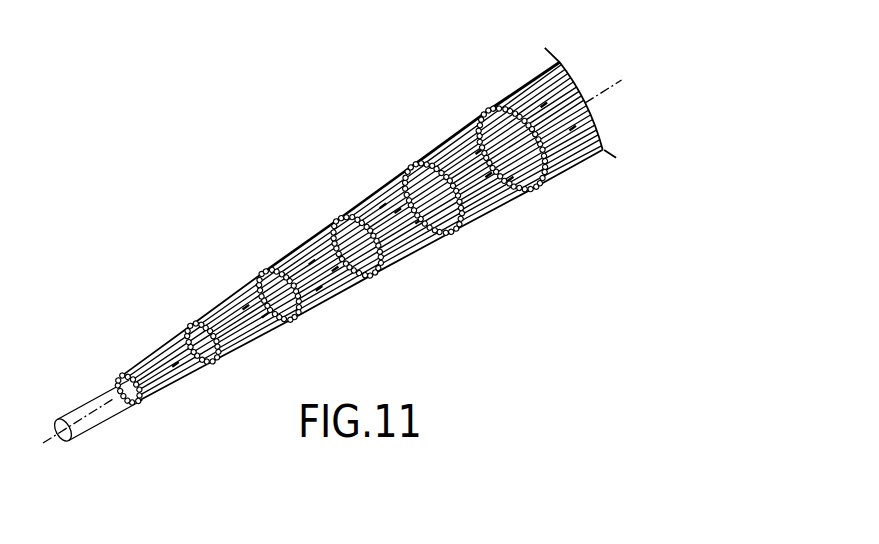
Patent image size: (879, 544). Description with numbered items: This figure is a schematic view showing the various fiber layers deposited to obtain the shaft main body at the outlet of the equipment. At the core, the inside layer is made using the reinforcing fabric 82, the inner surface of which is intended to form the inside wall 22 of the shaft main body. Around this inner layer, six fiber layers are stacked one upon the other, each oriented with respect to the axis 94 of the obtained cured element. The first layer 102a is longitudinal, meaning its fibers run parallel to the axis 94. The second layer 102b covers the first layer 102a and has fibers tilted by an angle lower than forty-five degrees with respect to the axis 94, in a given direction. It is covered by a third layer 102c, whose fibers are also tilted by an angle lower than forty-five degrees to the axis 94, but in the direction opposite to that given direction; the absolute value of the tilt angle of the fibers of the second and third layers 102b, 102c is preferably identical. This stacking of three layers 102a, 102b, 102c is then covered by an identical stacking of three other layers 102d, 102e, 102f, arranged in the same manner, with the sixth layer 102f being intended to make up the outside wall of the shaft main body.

The inside wall 22 is at (58, 427).
The reinforcing fabric 82 is at (107, 408).
The axis 94 is at (45, 443).
The first layer 102a is at (158, 348).
The second layer 102b is at (228, 302).
The third layer 102c is at (298, 246).
The fourth layer 102d is at (368, 203).
The fifth layer 102e is at (442, 148).
The sixth layer 102f is at (520, 86).